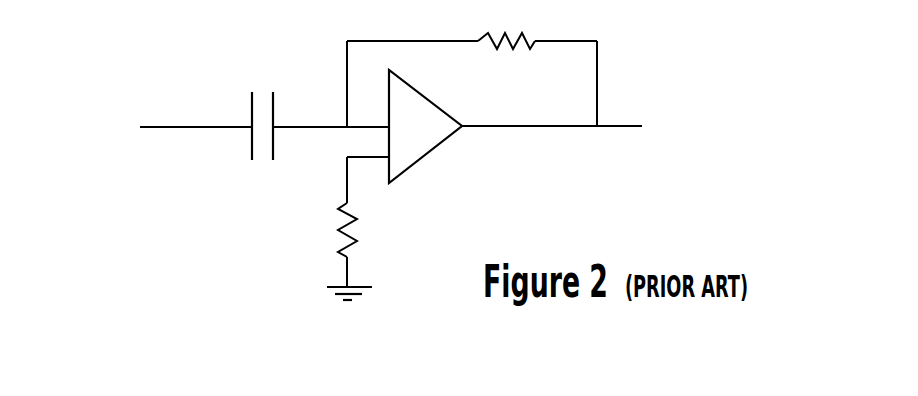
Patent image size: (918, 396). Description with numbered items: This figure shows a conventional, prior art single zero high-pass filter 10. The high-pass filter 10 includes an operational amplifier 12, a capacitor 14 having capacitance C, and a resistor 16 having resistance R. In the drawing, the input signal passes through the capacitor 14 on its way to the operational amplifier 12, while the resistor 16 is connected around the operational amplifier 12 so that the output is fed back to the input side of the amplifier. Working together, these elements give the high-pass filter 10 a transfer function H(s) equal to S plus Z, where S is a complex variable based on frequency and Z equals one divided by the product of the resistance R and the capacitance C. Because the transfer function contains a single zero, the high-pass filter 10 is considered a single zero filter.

The high-pass filter 10 is at (384, 180).
The operational amplifier 12 is at (431, 139).
The capacitor 14 is at (240, 113).
The resistor 16 is at (504, 58).